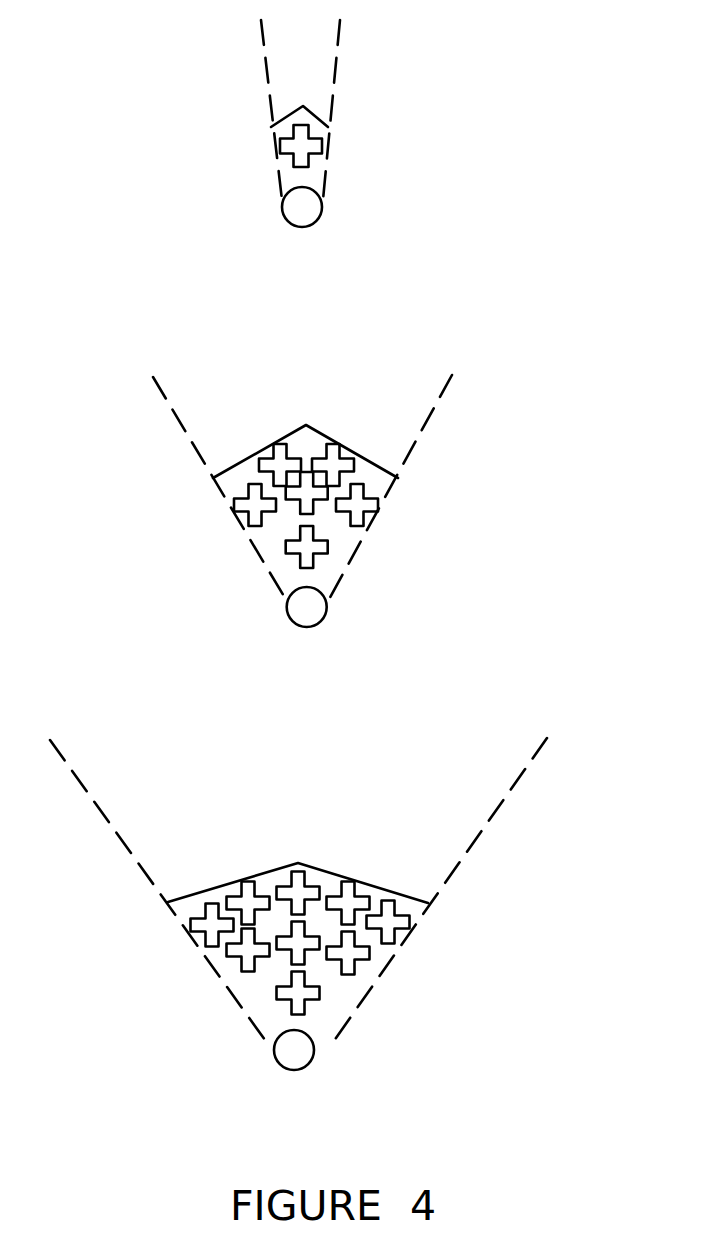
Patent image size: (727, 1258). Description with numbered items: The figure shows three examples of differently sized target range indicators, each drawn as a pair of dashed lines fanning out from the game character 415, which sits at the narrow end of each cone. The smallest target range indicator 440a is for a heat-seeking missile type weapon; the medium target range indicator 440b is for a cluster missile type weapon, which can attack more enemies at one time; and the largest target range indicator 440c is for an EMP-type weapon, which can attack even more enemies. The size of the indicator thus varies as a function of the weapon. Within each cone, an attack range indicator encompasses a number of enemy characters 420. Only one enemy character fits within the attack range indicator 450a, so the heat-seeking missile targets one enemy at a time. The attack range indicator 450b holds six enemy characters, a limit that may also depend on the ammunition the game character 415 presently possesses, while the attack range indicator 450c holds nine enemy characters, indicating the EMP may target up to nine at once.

The game character 415 is at (303, 207).
The enemy characters 420 is at (300, 145).
The target range indicator 440a is at (343, 40).
The target range indicator 440b is at (408, 458).
The target range indicator 440c is at (482, 833).
The attack range indicator 450a is at (307, 108).
The attack range indicator 450b is at (320, 432).
The attack range indicator 450c is at (320, 870).